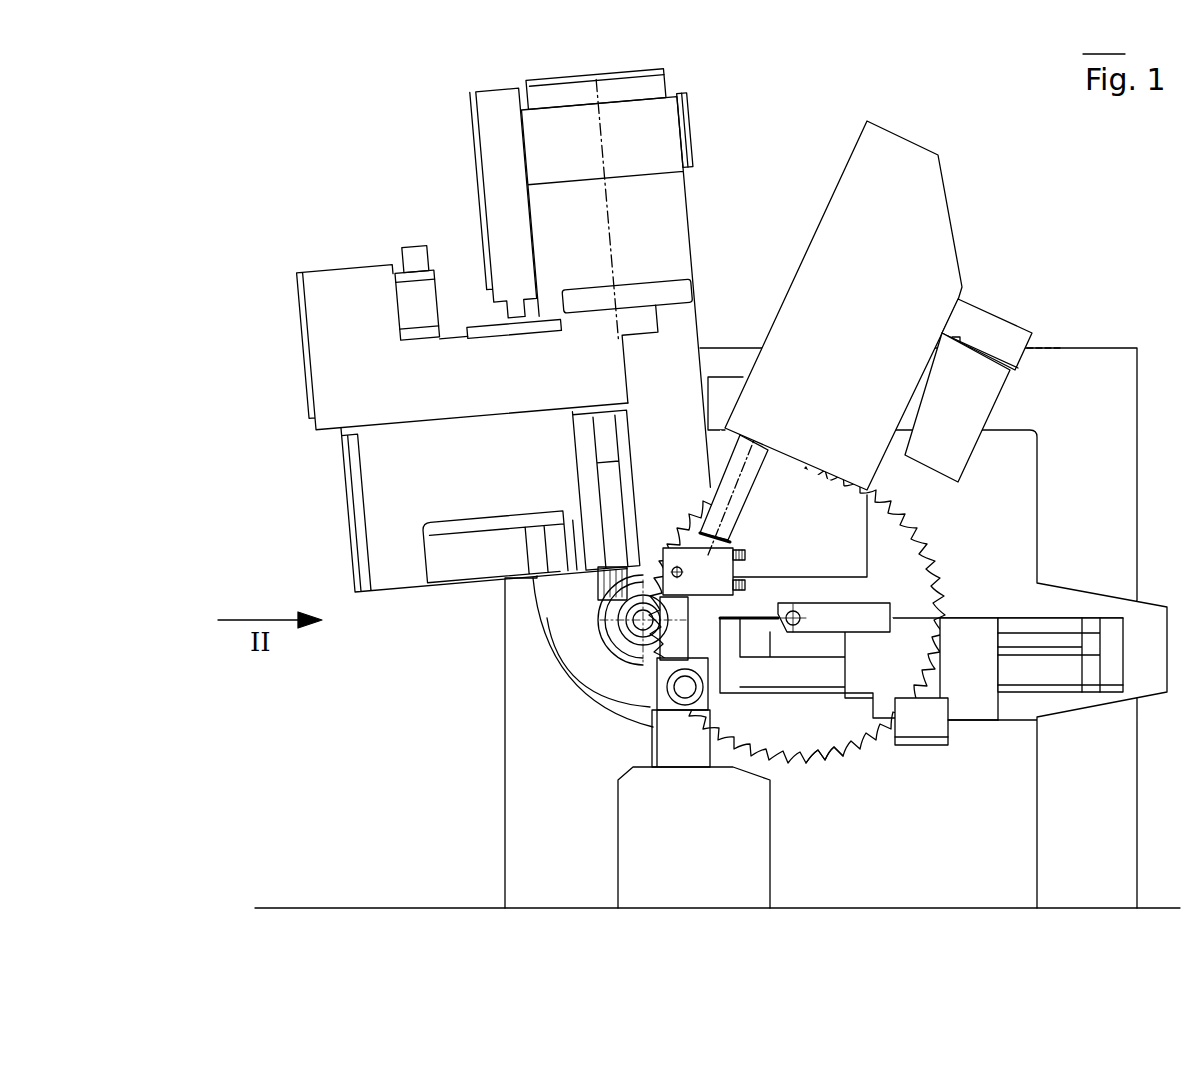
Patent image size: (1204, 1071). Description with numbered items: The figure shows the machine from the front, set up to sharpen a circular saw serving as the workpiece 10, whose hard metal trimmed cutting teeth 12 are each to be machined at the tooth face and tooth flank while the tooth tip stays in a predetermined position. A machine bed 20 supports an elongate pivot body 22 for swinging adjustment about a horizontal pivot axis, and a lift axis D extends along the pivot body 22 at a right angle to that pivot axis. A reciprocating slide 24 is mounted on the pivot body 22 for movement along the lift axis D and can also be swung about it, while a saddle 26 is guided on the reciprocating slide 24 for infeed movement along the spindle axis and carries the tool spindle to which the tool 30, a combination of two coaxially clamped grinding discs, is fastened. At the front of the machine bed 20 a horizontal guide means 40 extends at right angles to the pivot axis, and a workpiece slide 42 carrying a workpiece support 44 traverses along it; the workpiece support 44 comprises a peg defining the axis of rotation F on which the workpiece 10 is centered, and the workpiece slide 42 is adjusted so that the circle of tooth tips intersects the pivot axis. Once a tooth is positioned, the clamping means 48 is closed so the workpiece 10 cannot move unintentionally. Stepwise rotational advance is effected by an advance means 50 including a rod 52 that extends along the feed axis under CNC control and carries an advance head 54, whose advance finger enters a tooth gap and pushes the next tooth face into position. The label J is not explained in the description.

The workpiece 10 is at (830, 778).
The cutting teeth 12 is at (858, 754).
The machine bed 20 is at (455, 813).
The pivot body 22 is at (550, 618).
The reciprocating slide 24 is at (337, 384).
The saddle 26 is at (370, 488).
The tool 30 is at (585, 589).
The guide means 40 is at (1023, 673).
The workpiece slide 42 is at (968, 625).
The workpiece support 44 is at (812, 618).
The clamping means 48 is at (636, 733).
The advance means 50 is at (970, 259).
The rod 52 is at (750, 494).
The advance head 54 is at (738, 567).
The lift axis D is at (607, 212).
The axis of rotation F is at (787, 618).
The actuator axis J is at (765, 433).